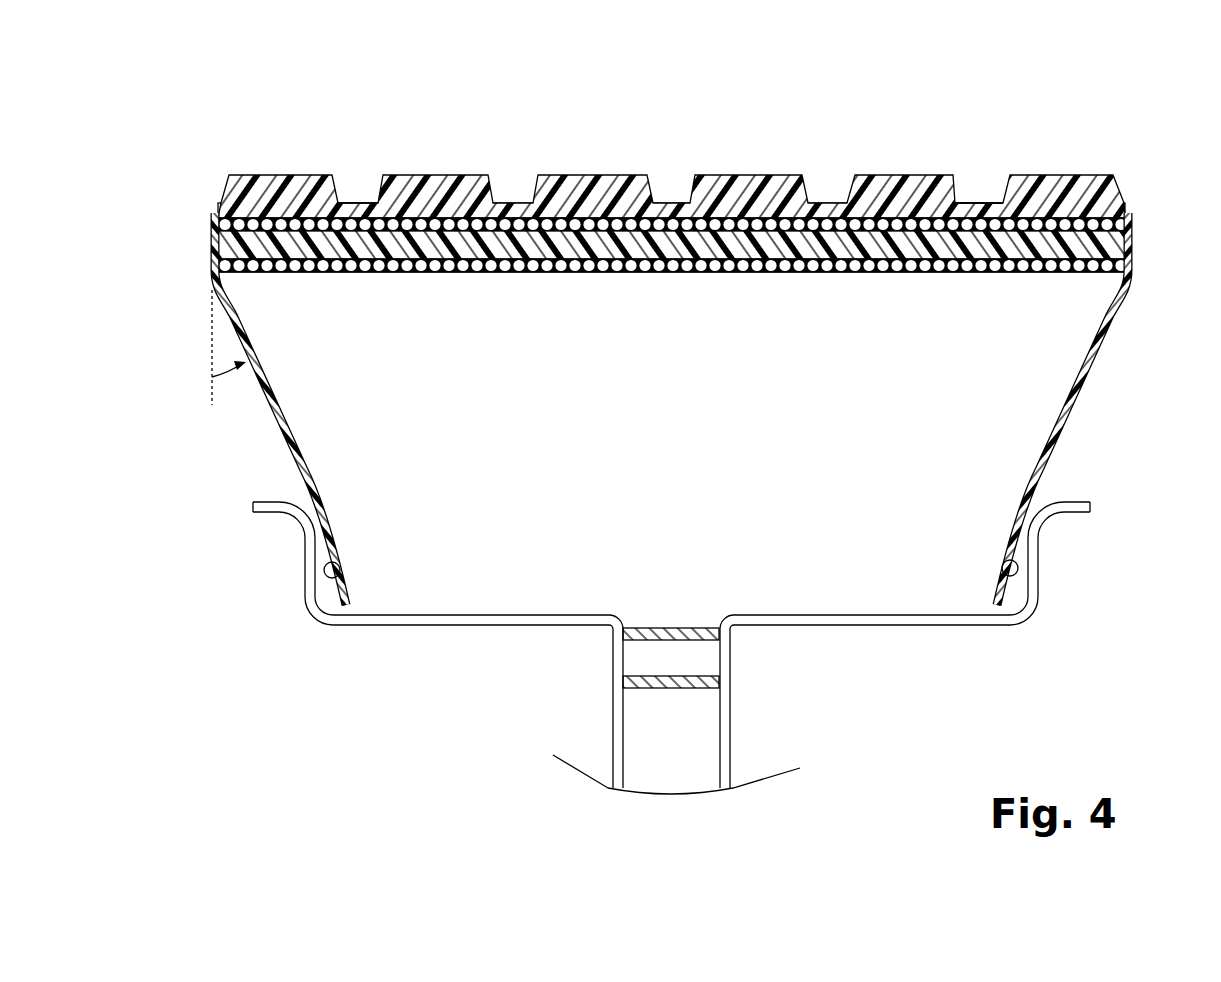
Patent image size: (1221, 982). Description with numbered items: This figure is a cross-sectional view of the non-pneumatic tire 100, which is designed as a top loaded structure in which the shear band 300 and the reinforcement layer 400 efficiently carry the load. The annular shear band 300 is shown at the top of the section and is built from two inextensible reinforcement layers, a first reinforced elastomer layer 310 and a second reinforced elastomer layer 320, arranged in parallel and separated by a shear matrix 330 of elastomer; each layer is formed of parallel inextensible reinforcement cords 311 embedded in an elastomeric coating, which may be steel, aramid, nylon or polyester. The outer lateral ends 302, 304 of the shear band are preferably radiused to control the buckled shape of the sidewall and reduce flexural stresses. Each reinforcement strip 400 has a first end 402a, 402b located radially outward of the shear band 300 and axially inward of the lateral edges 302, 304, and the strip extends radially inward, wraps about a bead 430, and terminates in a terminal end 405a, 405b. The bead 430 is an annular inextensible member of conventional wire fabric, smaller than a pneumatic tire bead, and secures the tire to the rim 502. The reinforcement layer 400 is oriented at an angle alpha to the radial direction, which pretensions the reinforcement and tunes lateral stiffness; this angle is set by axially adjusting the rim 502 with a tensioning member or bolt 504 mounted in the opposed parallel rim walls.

The non-pneumatic tire 100 is at (171, 79).
The shear band 300 is at (693, 227).
The outer lateral end of shear band 302 is at (217, 212).
The outer lateral end of shear band 304 is at (1126, 214).
The first reinforced elastomer layer 310 is at (748, 273).
The reinforcement cords 311 is at (384, 273).
The second reinforced elastomer layer 320 is at (807, 188).
The shear matrix 330 is at (963, 196).
The reinforcement layer 400 is at (664, 369).
The first end of reinforcement strip 402a is at (372, 207).
The first end of reinforcement strip 402b is at (963, 197).
The terminal end 405a is at (300, 500).
The terminal end 405b is at (1040, 502).
The bead 430 is at (340, 554).
The rim 502 is at (663, 594).
The tensioning member or bolt 504 is at (677, 641).